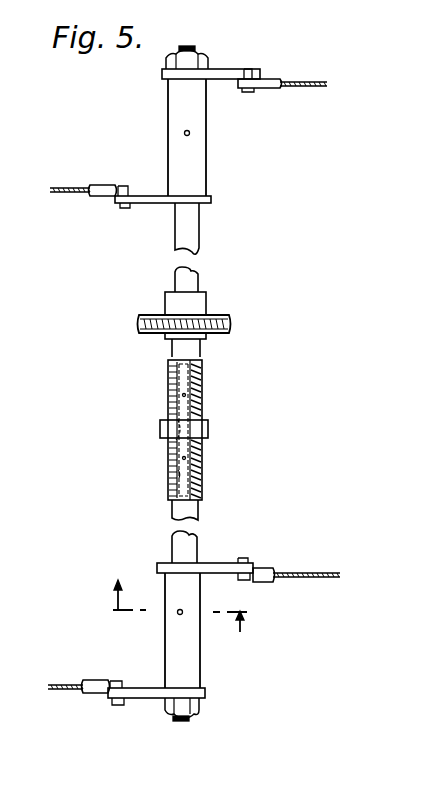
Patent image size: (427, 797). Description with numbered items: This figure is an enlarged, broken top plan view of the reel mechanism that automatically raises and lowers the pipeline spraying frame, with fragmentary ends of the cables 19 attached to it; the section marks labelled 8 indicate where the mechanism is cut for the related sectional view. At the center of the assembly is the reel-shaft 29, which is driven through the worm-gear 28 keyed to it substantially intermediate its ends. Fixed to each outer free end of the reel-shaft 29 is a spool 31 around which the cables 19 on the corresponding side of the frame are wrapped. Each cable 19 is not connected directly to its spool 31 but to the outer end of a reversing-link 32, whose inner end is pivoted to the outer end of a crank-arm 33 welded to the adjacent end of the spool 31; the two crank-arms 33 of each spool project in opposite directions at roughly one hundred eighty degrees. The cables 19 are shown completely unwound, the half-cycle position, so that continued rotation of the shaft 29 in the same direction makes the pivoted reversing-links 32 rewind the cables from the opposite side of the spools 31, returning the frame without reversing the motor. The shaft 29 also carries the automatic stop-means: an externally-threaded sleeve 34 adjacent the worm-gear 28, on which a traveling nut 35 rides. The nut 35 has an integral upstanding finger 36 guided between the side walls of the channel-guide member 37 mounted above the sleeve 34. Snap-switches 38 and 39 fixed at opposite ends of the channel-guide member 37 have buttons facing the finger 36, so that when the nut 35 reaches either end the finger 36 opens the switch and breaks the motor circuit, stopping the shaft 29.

The section line 8- 8 is at (179, 607).
The flexible cable 19 is at (314, 88).
The worm-gear 28 is at (232, 323).
The reel-shaft 29 is at (199, 270).
The spool 31 is at (207, 153).
The reversing-link 32 is at (273, 77).
The crank-arm 33 is at (228, 68).
The externally-threaded sleeve 34 is at (203, 472).
The traveling nut 35 is at (160, 430).
The upstanding finger 36 is at (170, 447).
The channel-guide member 37 is at (169, 408).
The snap-switch 38 is at (170, 467).
The snap-switch 39 is at (170, 386).